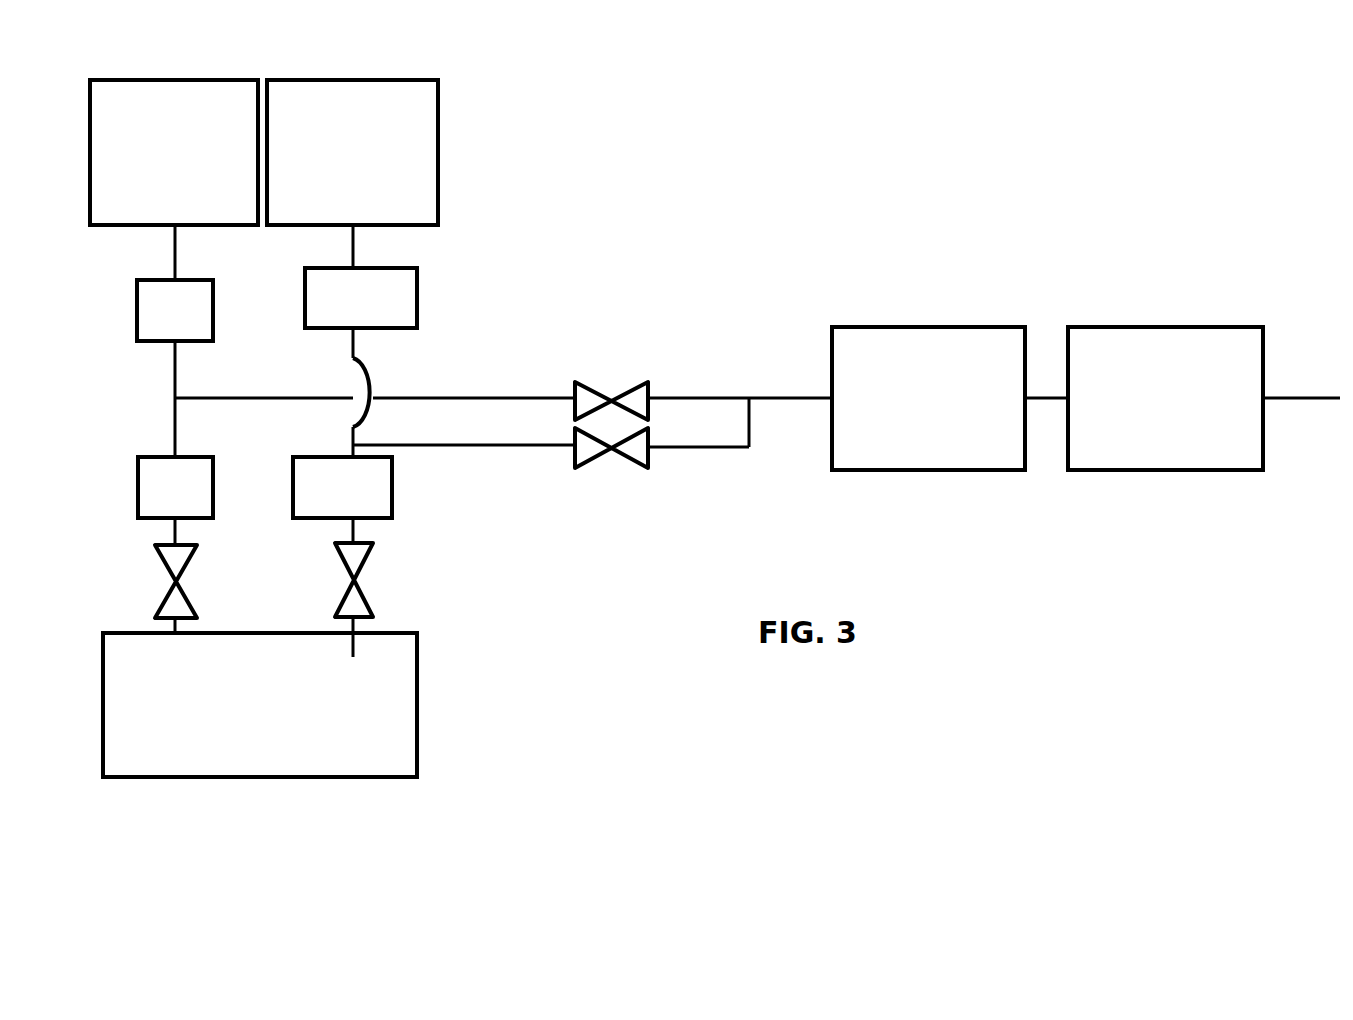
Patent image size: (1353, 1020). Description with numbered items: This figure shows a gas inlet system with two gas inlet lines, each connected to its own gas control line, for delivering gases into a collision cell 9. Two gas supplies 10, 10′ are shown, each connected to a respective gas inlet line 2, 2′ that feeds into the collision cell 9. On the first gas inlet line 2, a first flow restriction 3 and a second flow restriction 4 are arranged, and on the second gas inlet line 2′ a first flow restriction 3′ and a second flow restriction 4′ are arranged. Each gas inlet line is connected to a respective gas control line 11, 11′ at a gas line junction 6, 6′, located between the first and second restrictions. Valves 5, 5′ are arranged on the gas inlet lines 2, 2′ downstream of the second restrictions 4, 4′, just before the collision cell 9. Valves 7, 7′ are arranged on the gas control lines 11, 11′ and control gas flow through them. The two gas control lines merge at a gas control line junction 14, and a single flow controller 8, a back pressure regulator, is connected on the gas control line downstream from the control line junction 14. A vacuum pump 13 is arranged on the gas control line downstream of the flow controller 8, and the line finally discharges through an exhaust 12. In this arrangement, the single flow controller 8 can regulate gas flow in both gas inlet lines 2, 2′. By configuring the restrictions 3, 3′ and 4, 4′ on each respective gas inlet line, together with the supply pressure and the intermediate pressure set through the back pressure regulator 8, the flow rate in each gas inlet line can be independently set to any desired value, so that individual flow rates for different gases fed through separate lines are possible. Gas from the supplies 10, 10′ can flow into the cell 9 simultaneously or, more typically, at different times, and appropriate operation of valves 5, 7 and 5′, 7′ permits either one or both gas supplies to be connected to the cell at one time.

The gas supply 10 is at (147, 152).
The gas supply 10′ is at (377, 152).
The gas inlet line 2 is at (194, 252).
The gas inlet line 2′ is at (373, 246).
The first flow restriction 3 is at (191, 310).
The first flow restriction 3′ is at (381, 298).
The gas line junction 6 is at (152, 399).
The gas line junction 6′ is at (343, 392).
The gas control line 11 is at (375, 380).
The gas control line 11′ is at (464, 465).
The second flow restriction 4 is at (190, 487).
The second flow restriction 4′ is at (359, 487).
The valve 5 is at (191, 575).
The valve 5′ is at (373, 587).
The collision cell 9 is at (278, 705).
The valve 7 is at (611, 381).
The valve 7′ is at (611, 471).
The gas control line junction 14 is at (740, 404).
The flow controller 8 is at (950, 377).
The vacuum pump 13 is at (1165, 377).
The exhaust 12 is at (1301, 377).